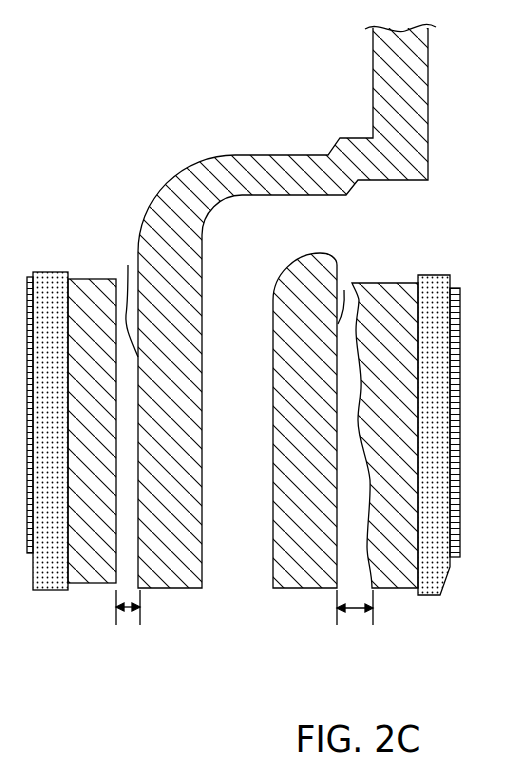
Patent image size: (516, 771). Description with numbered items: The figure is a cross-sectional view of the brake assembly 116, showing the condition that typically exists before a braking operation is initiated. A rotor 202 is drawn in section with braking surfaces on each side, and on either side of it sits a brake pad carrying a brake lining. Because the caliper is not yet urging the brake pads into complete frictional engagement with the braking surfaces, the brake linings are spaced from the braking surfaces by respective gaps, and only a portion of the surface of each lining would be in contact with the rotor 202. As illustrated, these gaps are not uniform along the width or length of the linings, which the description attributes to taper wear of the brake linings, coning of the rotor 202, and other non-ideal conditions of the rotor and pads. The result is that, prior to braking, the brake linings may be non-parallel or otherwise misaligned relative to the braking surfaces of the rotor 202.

The brake assembly 116 is at (160, 72).
The rotor 202 is at (273, 154).